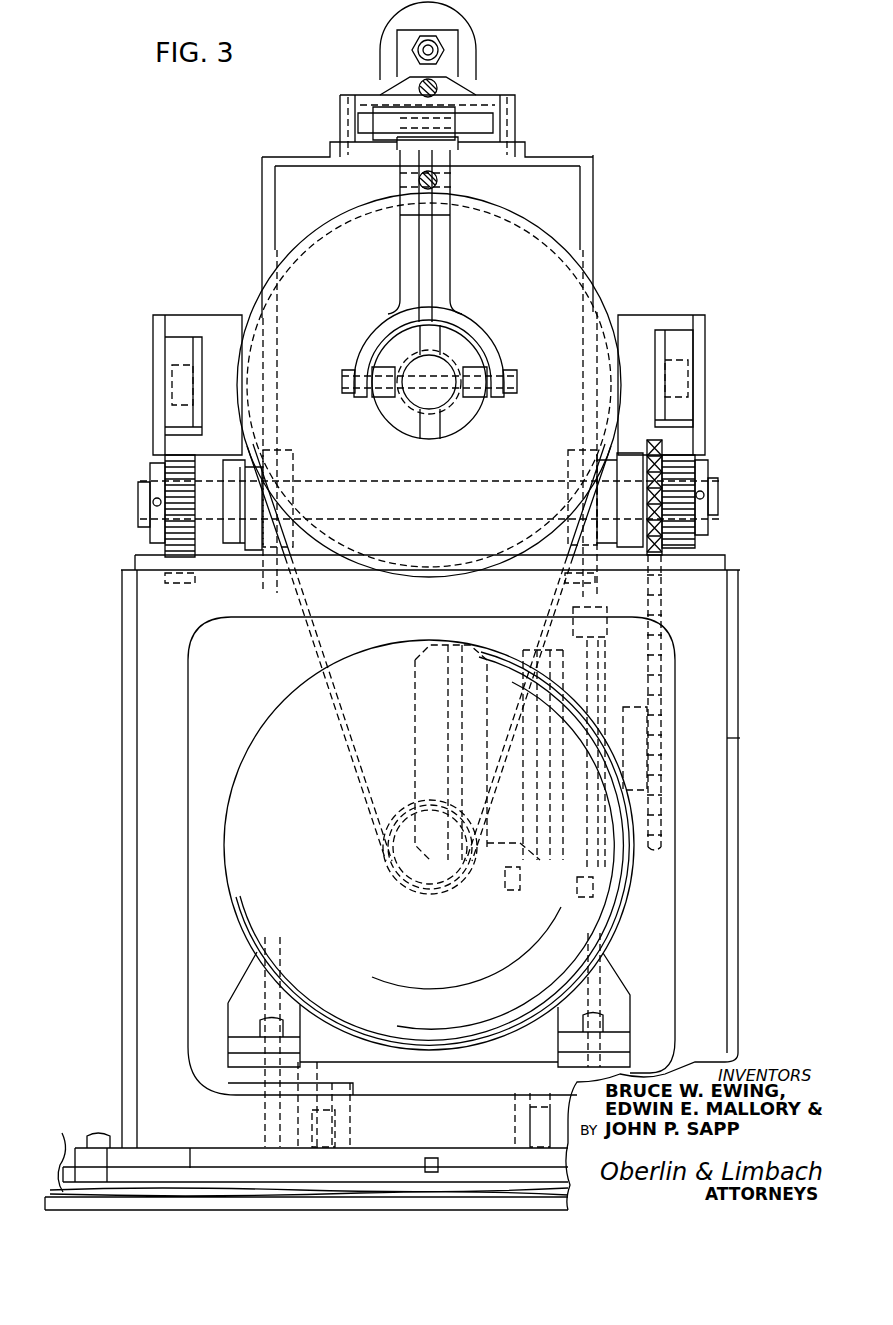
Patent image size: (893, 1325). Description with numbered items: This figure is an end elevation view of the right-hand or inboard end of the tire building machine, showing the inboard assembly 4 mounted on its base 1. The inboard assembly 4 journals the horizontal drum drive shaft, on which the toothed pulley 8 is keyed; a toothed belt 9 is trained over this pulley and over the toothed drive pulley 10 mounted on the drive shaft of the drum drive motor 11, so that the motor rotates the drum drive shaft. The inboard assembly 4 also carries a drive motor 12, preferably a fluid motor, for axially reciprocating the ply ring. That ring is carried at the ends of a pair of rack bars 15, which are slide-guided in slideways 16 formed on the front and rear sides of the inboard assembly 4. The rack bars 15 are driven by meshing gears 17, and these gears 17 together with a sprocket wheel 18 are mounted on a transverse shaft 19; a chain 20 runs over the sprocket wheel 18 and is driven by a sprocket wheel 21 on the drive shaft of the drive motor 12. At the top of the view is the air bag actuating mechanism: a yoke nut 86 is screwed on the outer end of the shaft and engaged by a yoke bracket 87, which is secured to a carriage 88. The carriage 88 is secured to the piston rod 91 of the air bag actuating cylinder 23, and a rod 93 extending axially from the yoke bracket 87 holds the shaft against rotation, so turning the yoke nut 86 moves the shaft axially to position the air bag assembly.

The base 1 is at (306, 1169).
The inboard assembly 4 is at (113, 944).
The toothed pulley 8 is at (248, 302).
The toothed belt 9 is at (262, 558).
The toothed drive pulley 10 is at (390, 882).
The drum drive motor 11 is at (228, 838).
The drive motor 12 is at (415, 728).
The rack bars 15 is at (170, 351).
The slideways 16 is at (202, 318).
The gears 17 is at (150, 543).
The sprocket wheel 18 is at (663, 457).
The transverse shaft 19 is at (139, 516).
The chain 20 is at (662, 603).
The sprocket wheel 21 is at (662, 774).
The air bag actuating cylinder 23 is at (477, 64).
The yoke nut 86 is at (466, 426).
The yoke bracket 87 is at (451, 262).
The carriage 88 is at (490, 124).
The piston rod 91 is at (430, 49).
The rod 93 is at (437, 181).